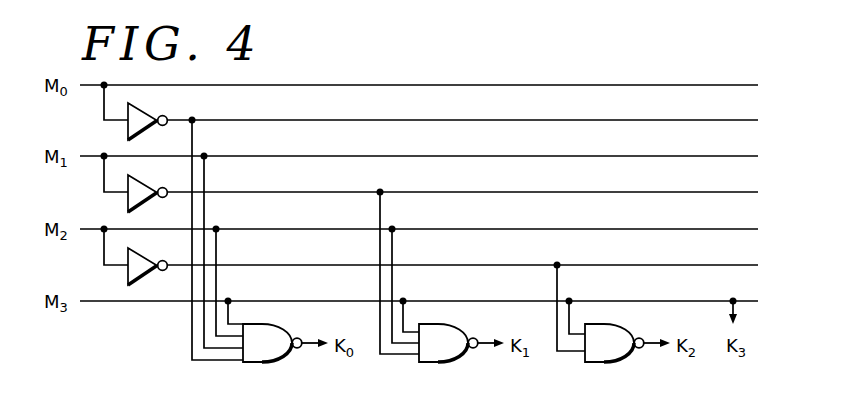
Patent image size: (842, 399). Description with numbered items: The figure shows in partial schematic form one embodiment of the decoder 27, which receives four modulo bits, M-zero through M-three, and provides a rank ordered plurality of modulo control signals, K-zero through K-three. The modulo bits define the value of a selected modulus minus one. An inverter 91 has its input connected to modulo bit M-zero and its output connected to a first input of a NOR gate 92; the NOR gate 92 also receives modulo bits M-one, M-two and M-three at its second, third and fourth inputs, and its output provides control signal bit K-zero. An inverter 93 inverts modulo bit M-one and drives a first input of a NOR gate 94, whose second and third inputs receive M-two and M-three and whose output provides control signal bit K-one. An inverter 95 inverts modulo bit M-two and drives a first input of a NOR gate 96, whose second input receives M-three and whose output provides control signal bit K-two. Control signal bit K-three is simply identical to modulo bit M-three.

The decoder 27 is at (351, 44).
The inverter 91 is at (128, 129).
The inverter 93 is at (128, 201).
The inverter 95 is at (128, 273).
The NOR gate 92 is at (285, 360).
The NOR gate 94 is at (462, 360).
The NOR gate 96 is at (627, 359).